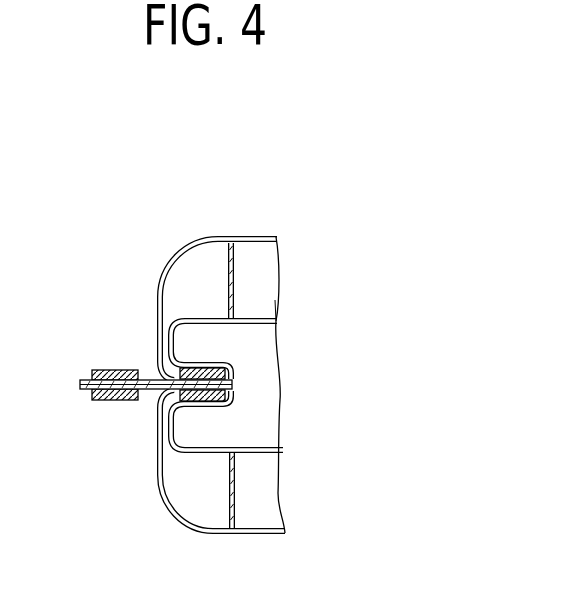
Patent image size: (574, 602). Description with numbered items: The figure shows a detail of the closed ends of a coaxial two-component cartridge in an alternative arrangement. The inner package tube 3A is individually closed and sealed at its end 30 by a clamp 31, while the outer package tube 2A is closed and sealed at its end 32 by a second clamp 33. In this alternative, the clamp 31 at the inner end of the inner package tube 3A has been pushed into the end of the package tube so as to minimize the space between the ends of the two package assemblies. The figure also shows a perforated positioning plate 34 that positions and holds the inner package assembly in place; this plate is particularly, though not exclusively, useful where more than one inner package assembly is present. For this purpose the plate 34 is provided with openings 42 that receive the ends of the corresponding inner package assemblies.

The outer package tube 2A is at (257, 237).
The inner package tube 3A is at (273, 310).
The end of the inner package tube 30 is at (185, 357).
The clamp 31 is at (227, 402).
The end of the outer package tube 32 is at (83, 392).
The second clamp 33 is at (112, 372).
The perforated positioning plate 34 is at (226, 245).
The openings 42 is at (227, 278).